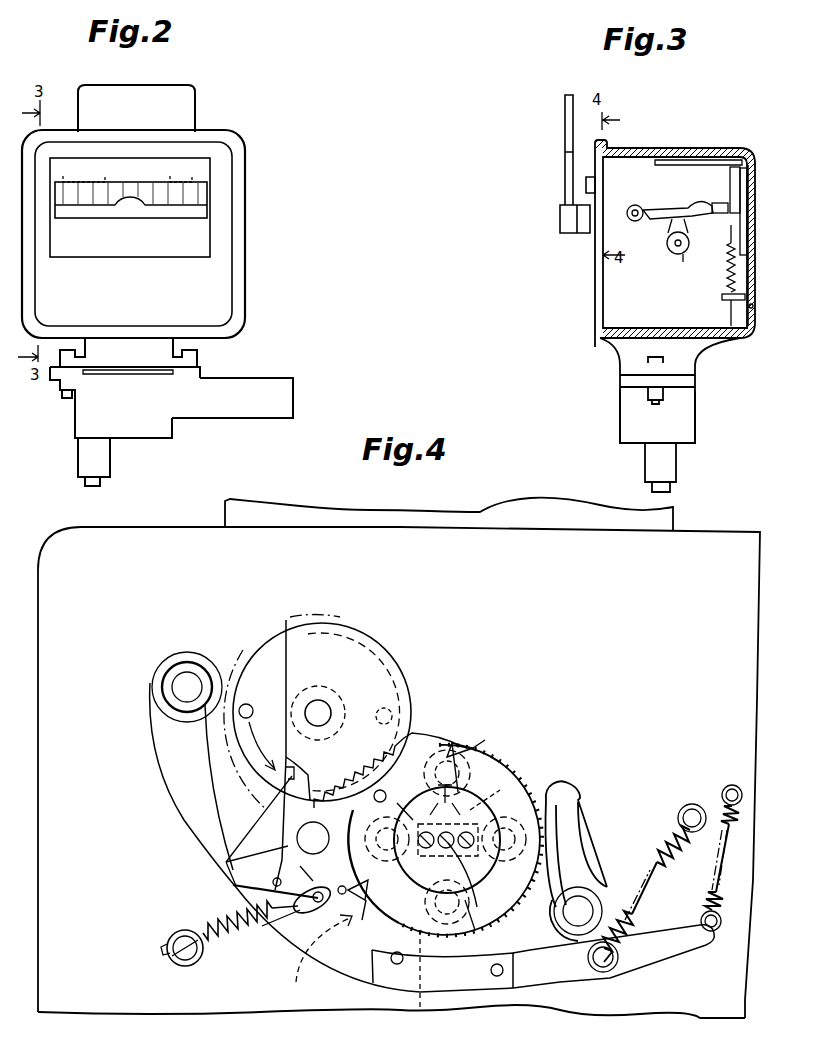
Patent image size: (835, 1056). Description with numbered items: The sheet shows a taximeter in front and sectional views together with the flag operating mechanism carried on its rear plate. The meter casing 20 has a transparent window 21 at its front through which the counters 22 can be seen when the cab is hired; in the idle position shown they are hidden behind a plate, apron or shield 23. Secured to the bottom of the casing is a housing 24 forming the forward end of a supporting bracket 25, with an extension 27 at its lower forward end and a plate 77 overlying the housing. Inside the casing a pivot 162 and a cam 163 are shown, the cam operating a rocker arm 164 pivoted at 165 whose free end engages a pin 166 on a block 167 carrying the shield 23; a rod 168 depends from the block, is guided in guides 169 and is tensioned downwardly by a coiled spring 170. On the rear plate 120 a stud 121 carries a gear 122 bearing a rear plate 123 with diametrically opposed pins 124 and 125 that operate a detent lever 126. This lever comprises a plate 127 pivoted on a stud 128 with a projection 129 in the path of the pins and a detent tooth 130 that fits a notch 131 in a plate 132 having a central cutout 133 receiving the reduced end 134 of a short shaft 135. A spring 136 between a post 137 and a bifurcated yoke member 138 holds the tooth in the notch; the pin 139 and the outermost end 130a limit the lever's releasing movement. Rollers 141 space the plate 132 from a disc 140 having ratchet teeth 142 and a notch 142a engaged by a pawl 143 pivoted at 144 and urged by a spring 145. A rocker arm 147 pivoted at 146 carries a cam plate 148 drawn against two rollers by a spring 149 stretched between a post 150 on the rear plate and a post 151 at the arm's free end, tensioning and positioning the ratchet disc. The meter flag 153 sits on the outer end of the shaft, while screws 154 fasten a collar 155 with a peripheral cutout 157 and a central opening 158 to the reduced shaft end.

In FIG. 2, the meter casing 20 is at (230, 238).
In FIG. 3, the meter casing 20 is at (690, 152).
In FIG. 2, the transparent window 21 is at (200, 235).
In FIG. 3, the transparent window 21 is at (750, 232).
In FIG. 2, the counters 22 is at (165, 180).
In FIG. 2, the plate, apron or shield 23 is at (112, 205).
In FIG. 3, the plate, apron or shield 23 is at (746, 203).
In FIG. 2, the casing or housing 24 is at (162, 432).
In FIG. 3, the casing or housing 24 is at (693, 425).
In FIG. 2, the supporting bracket 25 is at (290, 403).
In FIG. 2, the extension 27 is at (80, 461).
In FIG. 3, the extension 27 is at (676, 470).
In FIG. 2, the plate 77 is at (143, 375).
In FIG. 3, the plate 120 is at (597, 292).
In FIG. 4, the plate 120 is at (687, 545).
In FIG. 4, the stud or short shaft 121 is at (320, 713).
In FIG. 4, the gear 122 is at (406, 738).
In FIG. 4, the rear plate 123 is at (270, 652).
In FIG. 4, the pin 124 is at (260, 737).
In FIG. 4, the pin 125 is at (390, 715).
In FIG. 4, the detent lever 126 is at (342, 948).
In FIG. 4, the plate 127 is at (290, 853).
In FIG. 4, the stud 128 is at (305, 836).
In FIG. 4, the projection 129 is at (286, 772).
In FIG. 4, the detent tooth 130 is at (327, 948).
In FIG. 4, the outermost end 130a is at (238, 892).
In FIG. 4, the notch 131 is at (385, 945).
In FIG. 4, the plate 132 is at (405, 915).
In FIG. 4, the central cutout 133 is at (533, 770).
In FIG. 4, the reduced end 134 is at (510, 773).
In FIG. 4, the short shaft 135 is at (487, 777).
In FIG. 4, the spring 136 is at (258, 945).
In FIG. 4, the post 137 is at (186, 968).
In FIG. 4, the bifurcated yoke member 138 is at (300, 940).
In FIG. 4, the pin 139 is at (384, 791).
In FIG. 4, the disc or plate 140 is at (468, 935).
In FIG. 4, the rollers 141 is at (476, 882).
In FIG. 4, the ratchet teeth 142 is at (466, 750).
In FIG. 4, the notch 142a is at (376, 900).
In FIG. 4, the pawl 143 is at (578, 846).
In FIG. 4, the pivot 144 is at (578, 911).
In FIG. 4, the spring 145 is at (735, 862).
In FIG. 4, the pivot 146 is at (187, 687).
In FIG. 4, the rocker arm 147 is at (176, 798).
In FIG. 4, the cam plate 148 is at (425, 983).
In FIG. 4, the spring 149 is at (657, 838).
In FIG. 4, the post 150 is at (694, 816).
In FIG. 4, the post 151 is at (603, 972).
In FIG. 2, the meter flag 153 is at (183, 123).
In FIG. 3, the meter flag 153 is at (565, 176).
In FIG. 4, the meter flag 153 is at (514, 515).
In FIG. 4, the screws 154 is at (480, 820).
In FIG. 4, the disc or collar 155 is at (457, 787).
In FIG. 4, the cutout 157 is at (412, 826).
In FIG. 4, the central opening 158 is at (472, 945).
In FIG. 3, the pivot 162 is at (668, 249).
In FIG. 3, the cam 163 is at (684, 262).
In FIG. 3, the rocker arm 164 is at (660, 212).
In FIG. 3, the pivot 165 is at (636, 206).
In FIG. 3, the pin 166 is at (718, 204).
In FIG. 3, the block 167 is at (735, 166).
In FIG. 3, the rod 168 is at (728, 316).
In FIG. 3, the guides 169 is at (733, 226).
In FIG. 3, the coiled spring 170 is at (722, 296).